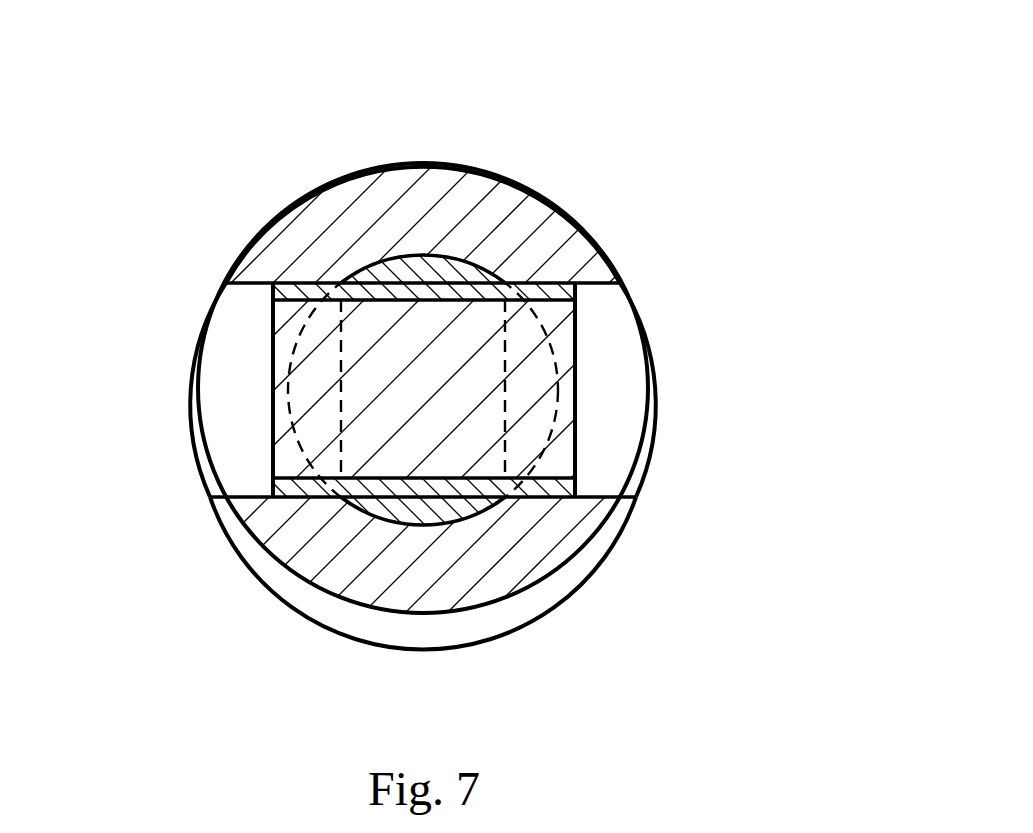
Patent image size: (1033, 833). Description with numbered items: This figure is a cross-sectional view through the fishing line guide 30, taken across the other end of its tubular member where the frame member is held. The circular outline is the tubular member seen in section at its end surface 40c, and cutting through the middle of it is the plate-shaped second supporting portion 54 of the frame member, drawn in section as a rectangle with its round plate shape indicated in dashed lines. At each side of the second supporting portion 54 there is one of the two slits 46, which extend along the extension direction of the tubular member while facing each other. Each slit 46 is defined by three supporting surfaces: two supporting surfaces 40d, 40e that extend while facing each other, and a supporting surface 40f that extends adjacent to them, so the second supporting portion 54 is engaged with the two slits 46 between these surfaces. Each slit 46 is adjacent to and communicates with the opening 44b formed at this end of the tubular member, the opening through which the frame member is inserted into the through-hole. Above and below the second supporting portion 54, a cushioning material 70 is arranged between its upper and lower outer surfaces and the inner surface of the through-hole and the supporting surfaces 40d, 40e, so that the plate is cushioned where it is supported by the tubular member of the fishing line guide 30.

The fishing line guide 30 is at (660, 142).
The end surface 40c is at (385, 195).
The supporting surface 40d is at (243, 287).
The supporting surface 40e is at (243, 487).
The supporting surface 40f is at (230, 423).
The opening 44b is at (383, 497).
The slit 46 is at (215, 390).
The second supporting portion 54 is at (540, 360).
The cushioning material 70 is at (468, 278).